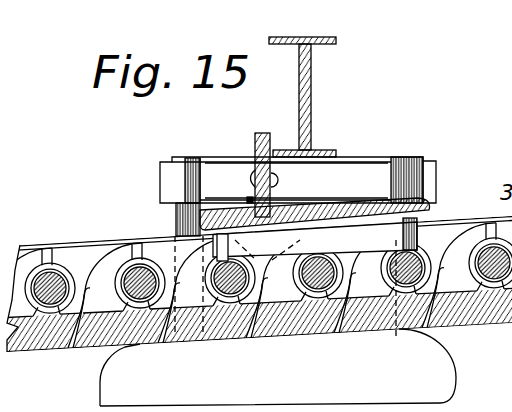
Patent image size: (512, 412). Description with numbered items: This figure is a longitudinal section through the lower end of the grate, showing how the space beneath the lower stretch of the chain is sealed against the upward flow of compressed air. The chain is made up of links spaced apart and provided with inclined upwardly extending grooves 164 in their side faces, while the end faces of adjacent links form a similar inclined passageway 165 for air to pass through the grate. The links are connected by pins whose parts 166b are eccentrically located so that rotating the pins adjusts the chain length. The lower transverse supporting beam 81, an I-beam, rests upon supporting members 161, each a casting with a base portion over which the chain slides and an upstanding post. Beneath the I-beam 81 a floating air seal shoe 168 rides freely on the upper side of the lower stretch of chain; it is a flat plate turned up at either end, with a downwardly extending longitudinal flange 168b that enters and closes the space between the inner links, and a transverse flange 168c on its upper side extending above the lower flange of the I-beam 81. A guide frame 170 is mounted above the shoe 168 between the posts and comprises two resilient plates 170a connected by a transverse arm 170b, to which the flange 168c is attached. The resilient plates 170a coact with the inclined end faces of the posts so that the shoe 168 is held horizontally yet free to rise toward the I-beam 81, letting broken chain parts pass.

The lower transverse supporting beam 81 is at (309, 82).
The floating air seal shoe 168 is at (342, 210).
The downwardly extending longitudinal flange 168b is at (374, 246).
The transverse flange 168c is at (288, 102).
The guide frame 170 is at (428, 172).
The resilient plate 170a is at (336, 172).
The transverse arm 170b is at (248, 172).
The eccentric part of pin 166b is at (50, 282).
The inclined passageway 165 is at (68, 336).
The upwardly extending groove 164 is at (100, 338).
The supporting member 161 is at (278, 367).